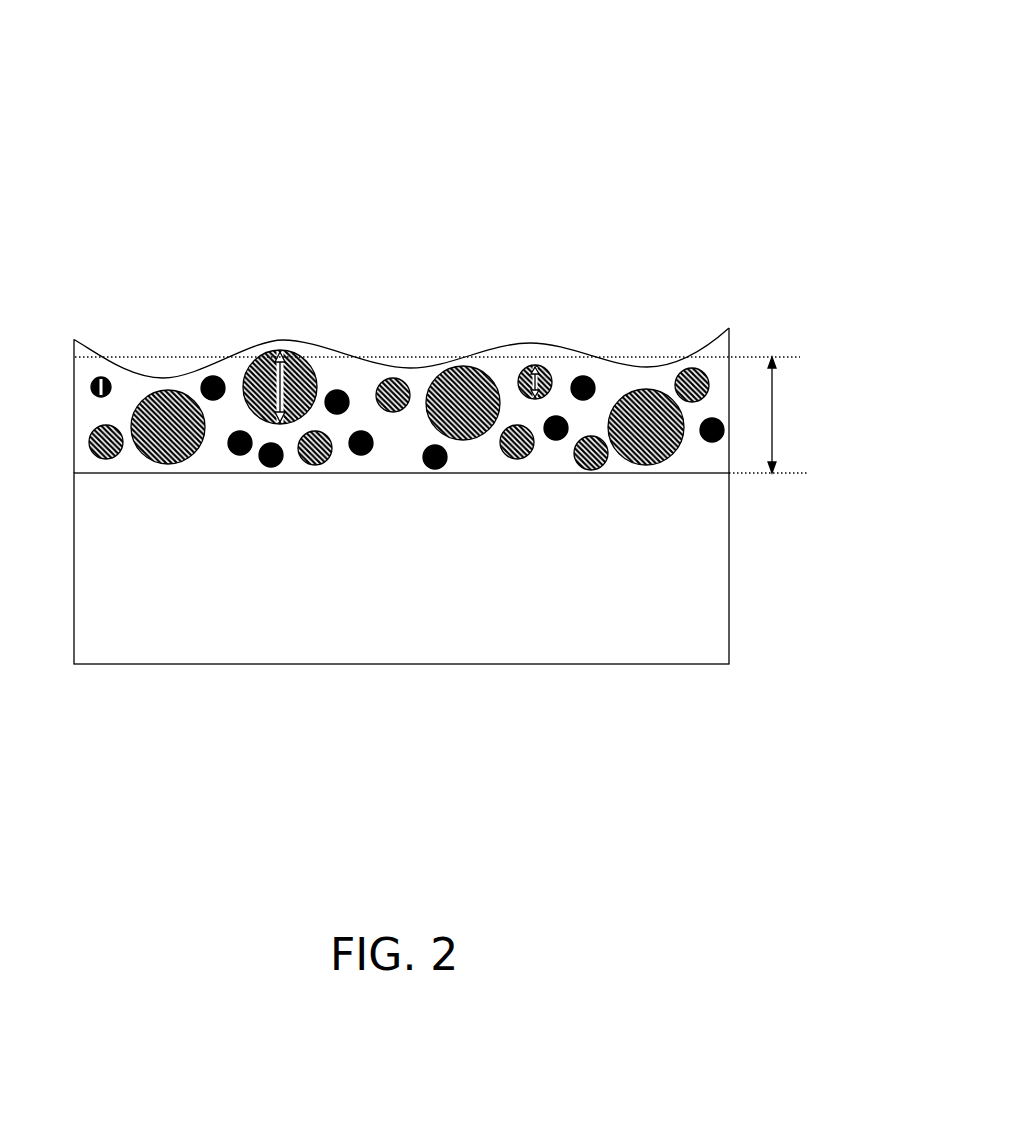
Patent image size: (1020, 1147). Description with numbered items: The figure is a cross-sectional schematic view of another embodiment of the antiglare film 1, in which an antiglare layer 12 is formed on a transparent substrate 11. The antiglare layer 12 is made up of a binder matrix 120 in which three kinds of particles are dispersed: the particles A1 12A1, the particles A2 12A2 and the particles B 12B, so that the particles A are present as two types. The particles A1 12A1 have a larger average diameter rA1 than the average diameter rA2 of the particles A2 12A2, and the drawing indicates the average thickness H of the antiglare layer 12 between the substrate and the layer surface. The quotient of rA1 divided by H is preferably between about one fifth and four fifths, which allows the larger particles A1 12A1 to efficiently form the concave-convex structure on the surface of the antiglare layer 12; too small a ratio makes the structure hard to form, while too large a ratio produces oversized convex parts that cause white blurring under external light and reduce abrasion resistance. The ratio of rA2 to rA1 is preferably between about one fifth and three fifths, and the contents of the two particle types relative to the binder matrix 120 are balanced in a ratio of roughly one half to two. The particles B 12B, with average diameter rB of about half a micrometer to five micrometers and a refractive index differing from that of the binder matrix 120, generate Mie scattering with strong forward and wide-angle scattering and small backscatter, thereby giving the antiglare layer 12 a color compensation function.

The antiglare film 1 is at (513, 127).
The transparent substrate 11 is at (680, 552).
The antiglare layer 12 is at (480, 335).
The binder matrix 120 is at (613, 385).
The particles A1 12A1 is at (310, 310).
The particles A2 12A2 is at (116, 297).
The particles B 12B is at (558, 301).
The average diameter of the particles A1 rA1 is at (305, 358).
The average diameter of the particles A2 rA2 is at (90, 388).
The average diameter of the particles B rB is at (545, 363).
The average thickness of the antiglare layer H is at (441, 415).